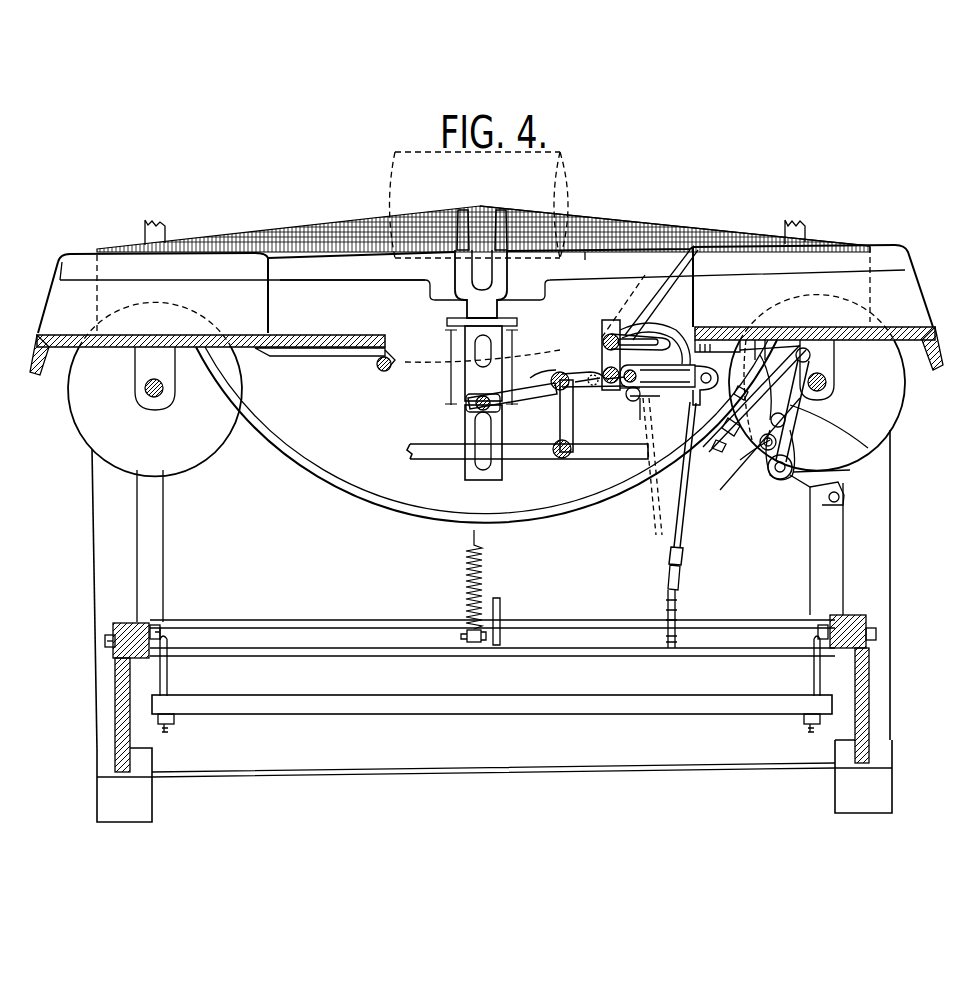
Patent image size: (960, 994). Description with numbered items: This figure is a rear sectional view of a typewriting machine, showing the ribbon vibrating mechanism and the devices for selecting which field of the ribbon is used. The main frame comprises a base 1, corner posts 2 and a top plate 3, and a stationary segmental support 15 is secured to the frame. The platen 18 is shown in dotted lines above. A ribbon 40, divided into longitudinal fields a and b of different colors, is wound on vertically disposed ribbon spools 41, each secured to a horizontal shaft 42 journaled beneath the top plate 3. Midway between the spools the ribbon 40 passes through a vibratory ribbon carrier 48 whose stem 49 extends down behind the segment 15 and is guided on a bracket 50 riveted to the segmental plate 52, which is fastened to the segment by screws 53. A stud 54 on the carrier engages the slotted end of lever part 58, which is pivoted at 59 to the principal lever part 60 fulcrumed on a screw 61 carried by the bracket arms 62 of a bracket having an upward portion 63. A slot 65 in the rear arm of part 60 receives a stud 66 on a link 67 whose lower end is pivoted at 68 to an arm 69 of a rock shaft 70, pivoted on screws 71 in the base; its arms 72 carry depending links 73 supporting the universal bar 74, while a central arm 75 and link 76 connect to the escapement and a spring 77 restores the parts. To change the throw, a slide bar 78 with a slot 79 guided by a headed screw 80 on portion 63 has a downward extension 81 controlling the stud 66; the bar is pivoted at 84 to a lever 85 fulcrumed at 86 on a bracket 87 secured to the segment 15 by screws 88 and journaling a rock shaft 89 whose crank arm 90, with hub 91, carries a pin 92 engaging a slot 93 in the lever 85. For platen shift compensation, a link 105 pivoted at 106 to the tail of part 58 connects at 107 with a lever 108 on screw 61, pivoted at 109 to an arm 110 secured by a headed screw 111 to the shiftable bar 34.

The base 1 is at (115, 713).
The corner posts 2 is at (127, 599).
The top plate 3 is at (885, 248).
The segmental support 15 is at (560, 526).
The platen 18 is at (575, 164).
The shiftable bar 34 is at (612, 460).
The ribbon 40 is at (590, 222).
The ribbon spools 41 is at (212, 445).
The horizontal shaft 42 is at (149, 396).
The vibratory ribbon carrier 48 is at (492, 295).
The stem 49 is at (465, 478).
The bracket 50 is at (500, 356).
The segmental plate 52 is at (356, 292).
The screws 53 is at (393, 360).
The stud 54 is at (470, 405).
The lever part 58 is at (530, 408).
The pivot 59 is at (596, 362).
The principal lever part 60 is at (705, 330).
The fulcrum screw 61 is at (606, 366).
The bracket arms 62 is at (604, 340).
The upwardly extending bracket portion 63 is at (650, 268).
The slot 65 is at (665, 390).
The stud 66 is at (668, 416).
The link 67 is at (680, 510).
The pivot 68 is at (666, 610).
The arm 69 is at (676, 632).
The rock shaft 70 is at (568, 630).
The screws 71 is at (109, 648).
The arms 72 is at (160, 630).
The depending links 73 is at (167, 675).
The universal bar 74 is at (388, 700).
The central arm 75 is at (492, 640).
The link 76 is at (508, 600).
The spring 77 is at (484, 578).
The slide bar 78 is at (676, 345).
The slot 79 is at (640, 334).
The headed guide screw 80 is at (612, 332).
The downward extension 81 is at (702, 410).
The pivotal connection 84 is at (806, 348).
The lever 85 is at (786, 412).
The fulcrum 86 is at (800, 427).
The bracket 87 is at (740, 446).
The screws 88 is at (762, 360).
The rock shaft 89 is at (772, 468).
The crank arm 90 is at (793, 456).
The hub 91 is at (781, 480).
The pin 92 is at (720, 490).
The slot 93 is at (770, 405).
The link 105 is at (628, 402).
The pivot 106 is at (640, 492).
The pivot 107 is at (592, 405).
The lever 108 is at (552, 374).
The pivot 109 is at (532, 380).
The arm 110 is at (573, 412).
The headed screw 111 is at (563, 458).
The ribbon field a is at (630, 224).
The ribbon field b is at (586, 252).